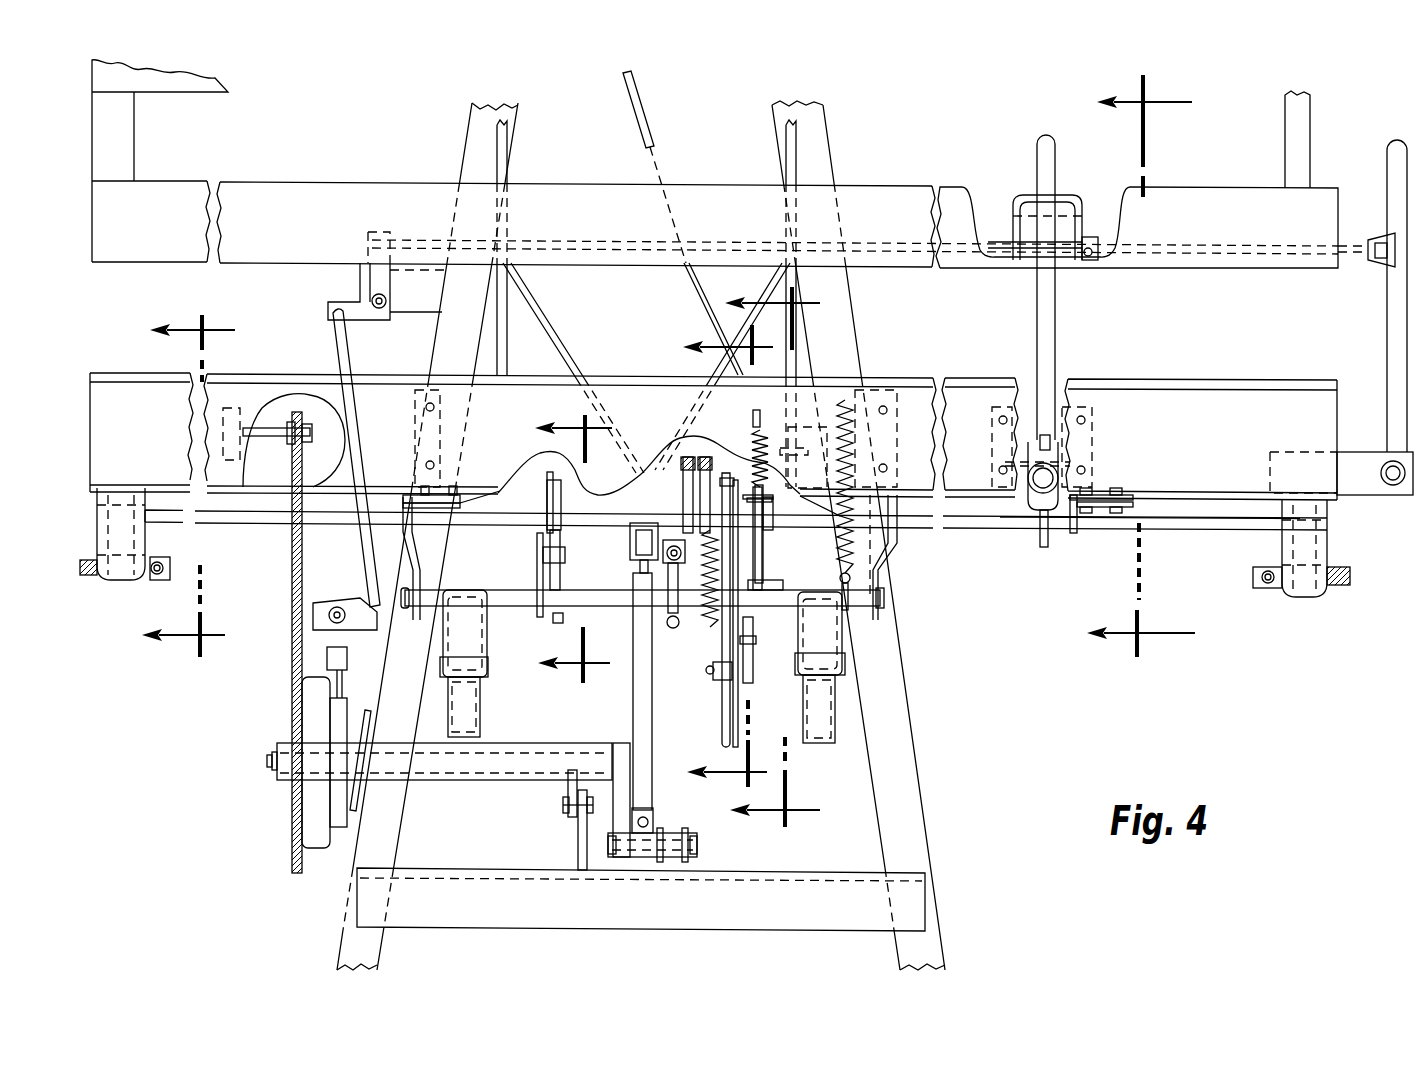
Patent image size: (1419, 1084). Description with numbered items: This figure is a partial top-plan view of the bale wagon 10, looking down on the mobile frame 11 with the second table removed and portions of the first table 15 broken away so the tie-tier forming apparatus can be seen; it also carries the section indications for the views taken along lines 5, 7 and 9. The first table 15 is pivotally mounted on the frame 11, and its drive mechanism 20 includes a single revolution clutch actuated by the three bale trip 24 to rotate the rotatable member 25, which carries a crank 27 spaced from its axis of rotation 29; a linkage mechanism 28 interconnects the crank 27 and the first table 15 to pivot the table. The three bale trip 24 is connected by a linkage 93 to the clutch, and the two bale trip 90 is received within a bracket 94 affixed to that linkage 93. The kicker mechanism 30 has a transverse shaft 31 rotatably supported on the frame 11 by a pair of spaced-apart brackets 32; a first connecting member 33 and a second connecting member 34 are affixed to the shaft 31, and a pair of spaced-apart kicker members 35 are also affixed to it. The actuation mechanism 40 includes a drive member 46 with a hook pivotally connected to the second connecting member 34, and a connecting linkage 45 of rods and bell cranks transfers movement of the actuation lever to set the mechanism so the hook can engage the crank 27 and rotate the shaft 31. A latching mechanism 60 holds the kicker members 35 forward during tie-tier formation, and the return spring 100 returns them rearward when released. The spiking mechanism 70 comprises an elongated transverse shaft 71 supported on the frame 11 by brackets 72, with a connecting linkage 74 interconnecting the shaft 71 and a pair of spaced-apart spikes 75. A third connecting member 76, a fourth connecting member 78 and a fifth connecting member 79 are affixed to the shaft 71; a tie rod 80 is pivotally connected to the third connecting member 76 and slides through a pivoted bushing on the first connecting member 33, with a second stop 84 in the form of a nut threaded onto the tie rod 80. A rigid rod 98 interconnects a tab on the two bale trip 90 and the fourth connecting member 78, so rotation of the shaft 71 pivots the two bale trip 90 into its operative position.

The section line 5- 5 is at (731, 551).
The section line 7- 7 is at (782, 549).
The section line 9- 9 is at (586, 542).
The bale wagon 10 is at (1066, 708).
The mobile frame 11 is at (913, 752).
The first table 15 is at (1178, 380).
The drive mechanism 20 is at (250, 676).
The three bale trip 24 is at (318, 850).
The rotatable member 25 is at (623, 747).
The crank 27 is at (698, 846).
The linkage mechanism 28 is at (652, 753).
The axis of rotation 29 is at (270, 763).
The kicker mechanism 30 is at (880, 631).
The transverse shaft 31 is at (887, 598).
The brackets 32 is at (410, 576).
The first connecting member 33 is at (552, 618).
The second connecting member 34 is at (697, 616).
The kicker members 35 is at (450, 710).
The actuation mechanism 40 is at (768, 566).
The connecting linkage 45 is at (644, 118).
The drive member 46 is at (670, 628).
The latching mechanism 60 is at (772, 420).
The spiking mechanism 70 is at (1348, 520).
The transverse shaft 71 is at (1172, 530).
The brackets 72 is at (130, 528).
The connecting linkage 74 is at (120, 552).
The spikes 75 is at (158, 582).
The third connecting member 76 is at (543, 492).
The fourth connecting member 78 is at (1046, 548).
The fifth connecting member 79 is at (743, 455).
The tie rod 80 is at (562, 580).
The second stop 84 is at (543, 618).
The two bale trip 90 is at (1047, 322).
The linkage 93 is at (990, 240).
The bracket 94 is at (1065, 195).
The rigid rod 98 is at (1027, 500).
The return spring 100 is at (857, 363).